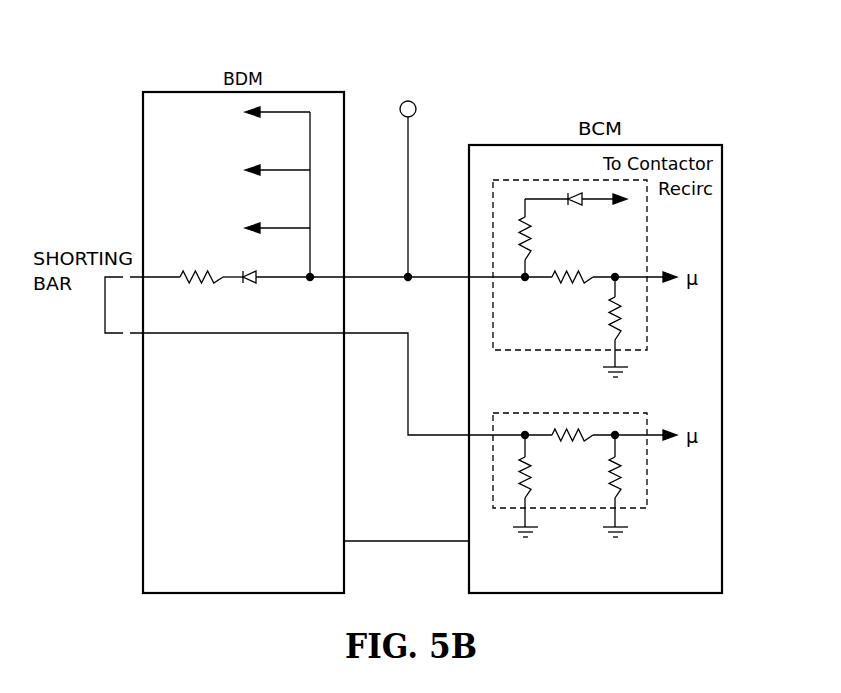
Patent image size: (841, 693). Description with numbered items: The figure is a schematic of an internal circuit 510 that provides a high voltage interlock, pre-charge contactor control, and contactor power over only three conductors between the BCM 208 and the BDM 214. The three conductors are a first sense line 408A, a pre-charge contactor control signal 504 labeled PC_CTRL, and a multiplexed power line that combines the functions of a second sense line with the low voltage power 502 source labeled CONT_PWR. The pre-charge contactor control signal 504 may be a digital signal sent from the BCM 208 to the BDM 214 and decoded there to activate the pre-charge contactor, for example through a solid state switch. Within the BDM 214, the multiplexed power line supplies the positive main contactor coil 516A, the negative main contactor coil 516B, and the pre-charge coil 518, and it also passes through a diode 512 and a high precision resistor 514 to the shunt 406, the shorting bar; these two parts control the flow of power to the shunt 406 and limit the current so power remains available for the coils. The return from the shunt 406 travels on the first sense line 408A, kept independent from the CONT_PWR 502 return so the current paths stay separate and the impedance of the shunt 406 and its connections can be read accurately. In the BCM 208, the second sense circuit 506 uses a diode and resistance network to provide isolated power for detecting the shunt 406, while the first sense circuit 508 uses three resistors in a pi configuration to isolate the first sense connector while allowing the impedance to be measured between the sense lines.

The internal circuit 510 is at (652, 66).
The low voltage power 502 is at (408, 187).
The BCM 208 is at (722, 232).
The BDM 214 is at (143, 452).
The shunt 406 is at (103, 303).
The resistor 514 is at (180, 284).
The diode 512 is at (260, 283).
The negative main contactor coil 516B is at (290, 114).
The pre-charge coil 518 is at (290, 172).
The positive main contactor coil 516A is at (290, 230).
The first sense line 408A is at (373, 331).
The second sense circuit 506 is at (647, 300).
The first sense circuit 508 is at (647, 473).
The pre-charge contactor control signal 504 is at (440, 538).